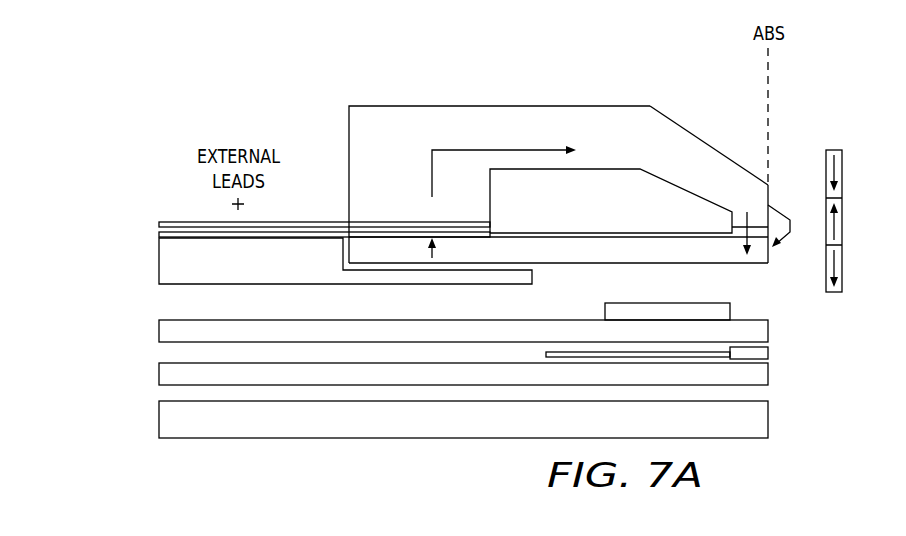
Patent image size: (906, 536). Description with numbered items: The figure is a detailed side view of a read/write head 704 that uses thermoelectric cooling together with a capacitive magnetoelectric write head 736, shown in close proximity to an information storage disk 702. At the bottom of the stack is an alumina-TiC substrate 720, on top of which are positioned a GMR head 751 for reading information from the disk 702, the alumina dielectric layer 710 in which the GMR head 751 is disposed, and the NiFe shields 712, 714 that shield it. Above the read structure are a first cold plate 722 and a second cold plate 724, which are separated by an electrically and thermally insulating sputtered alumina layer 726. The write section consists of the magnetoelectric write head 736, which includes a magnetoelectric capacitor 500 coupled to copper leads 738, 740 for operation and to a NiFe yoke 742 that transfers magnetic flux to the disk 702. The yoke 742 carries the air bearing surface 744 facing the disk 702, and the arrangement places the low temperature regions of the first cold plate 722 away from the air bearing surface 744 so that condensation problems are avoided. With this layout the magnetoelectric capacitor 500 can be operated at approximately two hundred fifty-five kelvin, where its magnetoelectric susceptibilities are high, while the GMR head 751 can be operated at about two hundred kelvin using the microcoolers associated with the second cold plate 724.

The read/write head 704 is at (155, 141).
The NiFe yoke 742 is at (496, 106).
The magnetoelectric write head 736 is at (710, 134).
The air bearing surface 744 is at (772, 196).
The information storage disk 702 is at (828, 150).
The magnetoelectric capacitor 500 is at (490, 232).
The copper lead 740 is at (158, 228).
The copper lead 738 is at (303, 231).
The first cold plate 722 is at (159, 265).
The sputtered alumina layer 726 is at (165, 303).
The NiFe shield 712 is at (159, 330).
The alumina dielectric layer 710 is at (165, 352).
The GMR head 751 is at (768, 358).
The second cold plate 724 is at (732, 312).
The NiFe shield 714 is at (159, 373).
The alumina-TiC substrate 720 is at (462, 440).